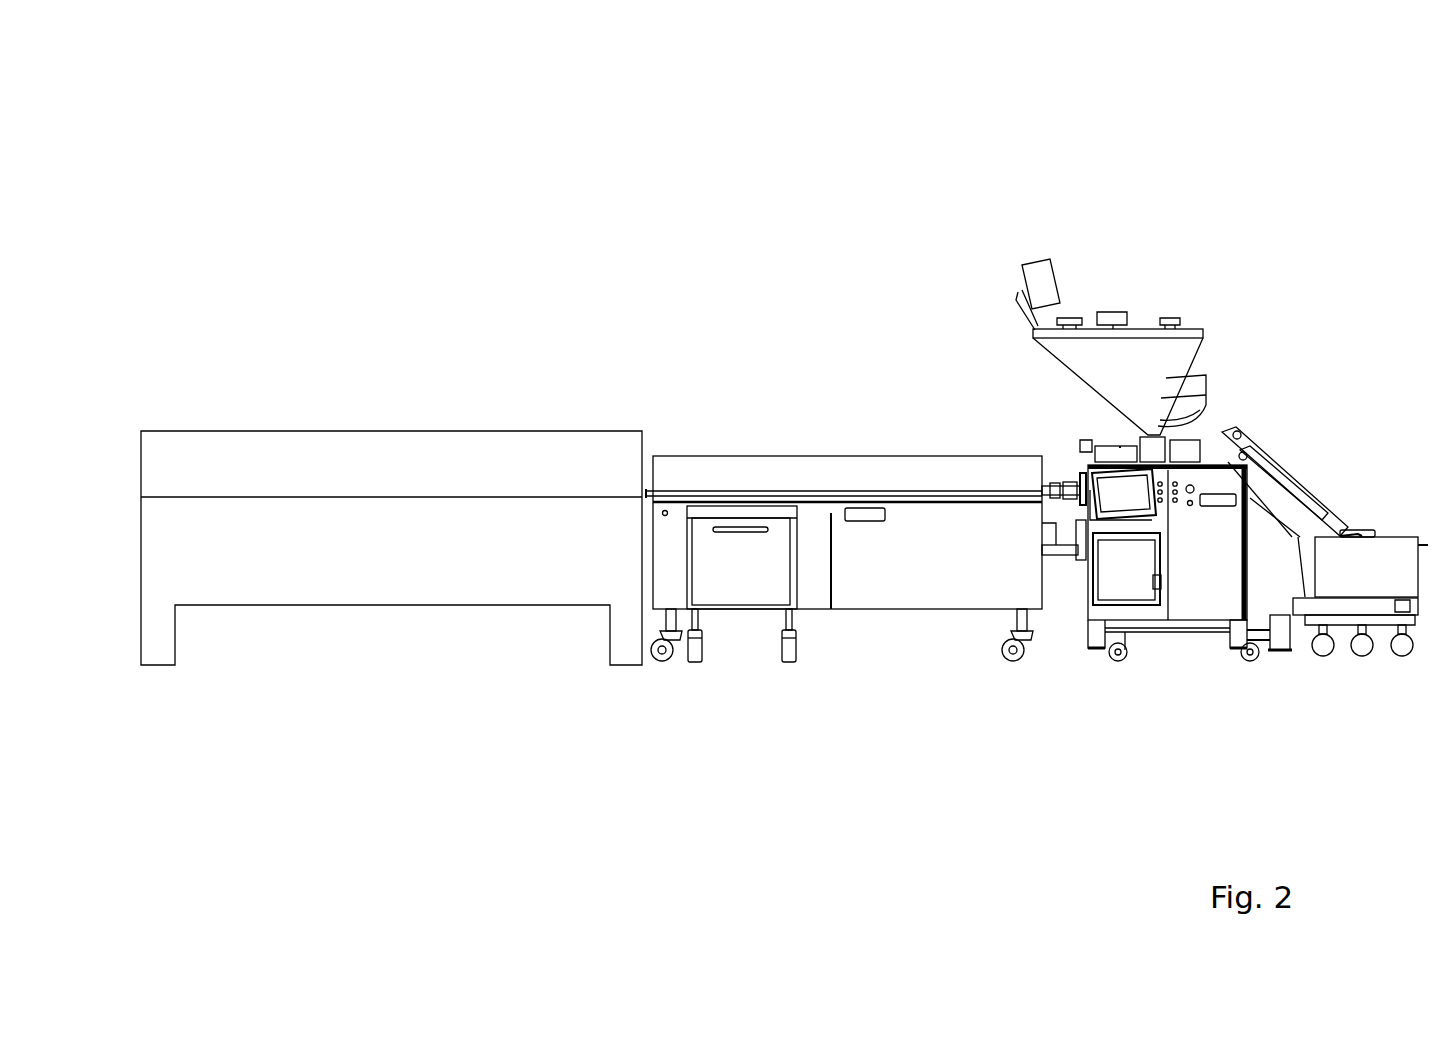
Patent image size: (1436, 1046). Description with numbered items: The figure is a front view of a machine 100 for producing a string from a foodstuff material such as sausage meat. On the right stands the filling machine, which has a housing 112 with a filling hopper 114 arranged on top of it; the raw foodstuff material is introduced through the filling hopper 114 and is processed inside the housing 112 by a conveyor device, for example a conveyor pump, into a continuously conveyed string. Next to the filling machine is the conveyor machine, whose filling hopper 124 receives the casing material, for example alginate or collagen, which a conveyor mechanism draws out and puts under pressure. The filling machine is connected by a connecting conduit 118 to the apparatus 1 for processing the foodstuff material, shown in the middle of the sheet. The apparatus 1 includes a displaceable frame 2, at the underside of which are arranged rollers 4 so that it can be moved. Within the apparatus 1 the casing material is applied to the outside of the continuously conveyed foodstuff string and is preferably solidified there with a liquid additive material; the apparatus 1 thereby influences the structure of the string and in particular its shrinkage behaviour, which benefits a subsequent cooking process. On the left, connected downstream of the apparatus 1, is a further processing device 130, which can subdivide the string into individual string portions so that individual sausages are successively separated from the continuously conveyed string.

The machine 100 is at (712, 202).
The further processing device 130 is at (379, 377).
The apparatus 1 is at (844, 526).
The displaceable frame 2 is at (908, 590).
The rollers 4 is at (788, 655).
The connecting conduit 118 is at (1055, 470).
The housing 112 is at (1198, 592).
The filling hopper 114 is at (1180, 348).
The filling hopper 124 is at (1198, 386).